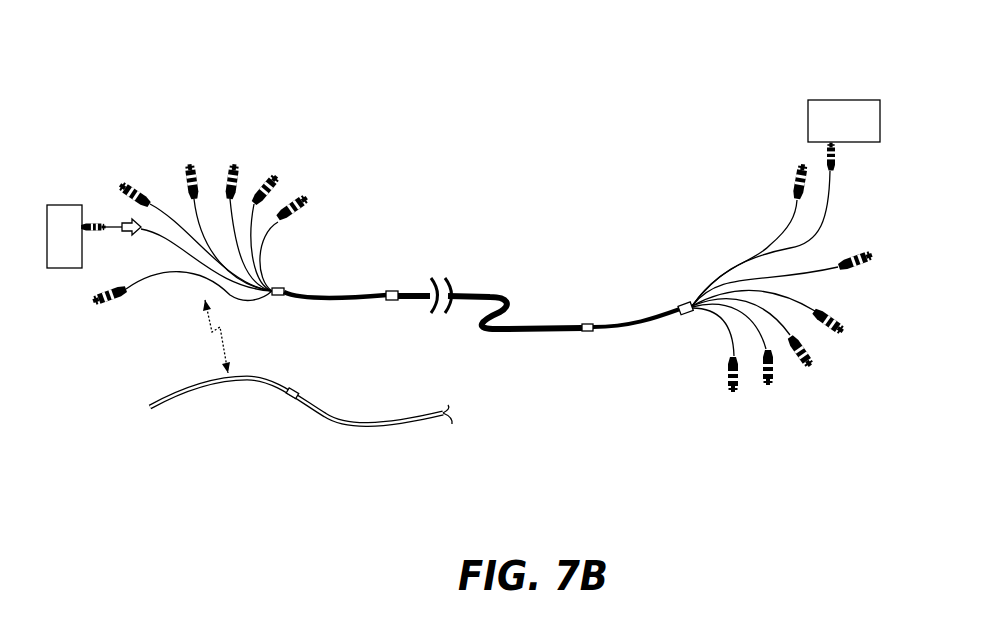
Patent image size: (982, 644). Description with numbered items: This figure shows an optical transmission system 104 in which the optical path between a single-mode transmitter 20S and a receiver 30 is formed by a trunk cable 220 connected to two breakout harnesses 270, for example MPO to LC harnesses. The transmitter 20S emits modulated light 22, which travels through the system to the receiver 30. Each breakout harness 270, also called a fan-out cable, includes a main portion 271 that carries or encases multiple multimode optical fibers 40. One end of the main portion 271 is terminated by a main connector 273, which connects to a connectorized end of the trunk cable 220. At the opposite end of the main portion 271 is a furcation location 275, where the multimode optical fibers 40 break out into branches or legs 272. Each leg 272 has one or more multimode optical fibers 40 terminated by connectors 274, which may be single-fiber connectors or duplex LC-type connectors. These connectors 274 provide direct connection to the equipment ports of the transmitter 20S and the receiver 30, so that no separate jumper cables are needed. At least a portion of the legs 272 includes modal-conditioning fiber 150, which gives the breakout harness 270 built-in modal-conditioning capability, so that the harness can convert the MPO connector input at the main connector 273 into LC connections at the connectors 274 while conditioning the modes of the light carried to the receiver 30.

The system 104 is at (228, 70).
The single-mode transmitter 20S is at (63, 205).
The modulated light 22 is at (122, 227).
The connectors 274 is at (234, 162).
The legs 272 is at (298, 147).
The breakout harness 270 is at (357, 199).
The furcation location 275 is at (279, 297).
The main portion 271 is at (323, 297).
The main connector 273 is at (392, 291).
The trunk cable 220 is at (485, 290).
The receiver 30 is at (860, 134).
The modal-conditioning fiber 150 is at (212, 384).
The multimode optical fiber 40 is at (345, 420).